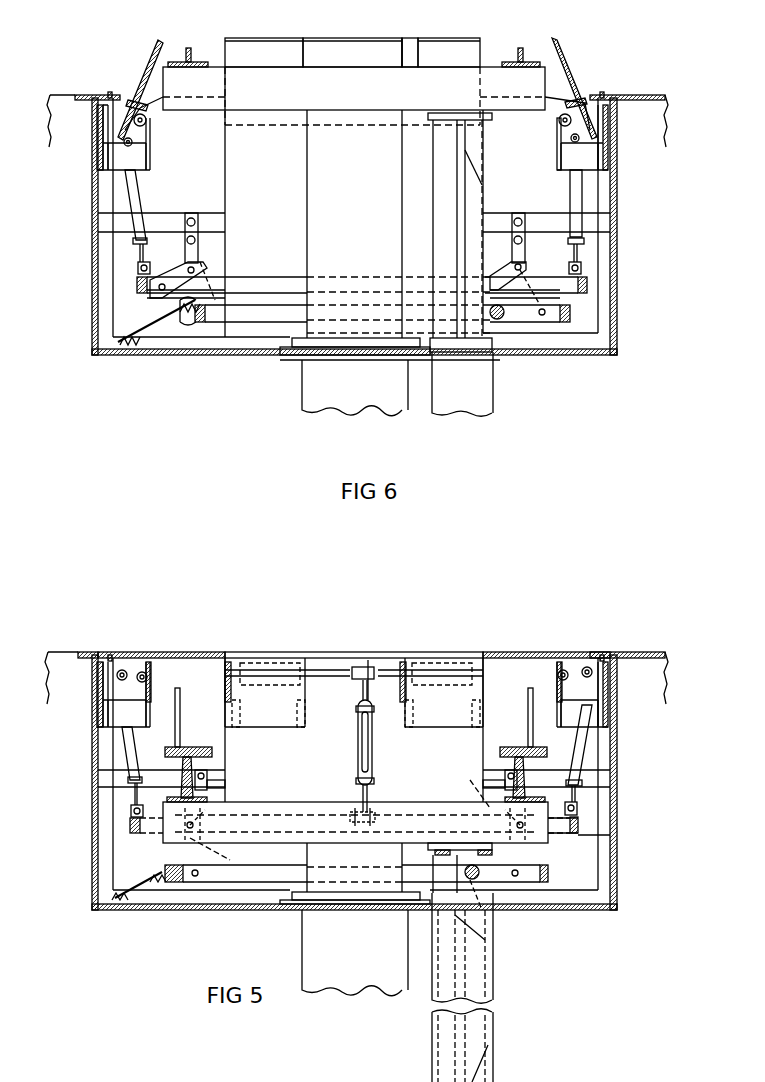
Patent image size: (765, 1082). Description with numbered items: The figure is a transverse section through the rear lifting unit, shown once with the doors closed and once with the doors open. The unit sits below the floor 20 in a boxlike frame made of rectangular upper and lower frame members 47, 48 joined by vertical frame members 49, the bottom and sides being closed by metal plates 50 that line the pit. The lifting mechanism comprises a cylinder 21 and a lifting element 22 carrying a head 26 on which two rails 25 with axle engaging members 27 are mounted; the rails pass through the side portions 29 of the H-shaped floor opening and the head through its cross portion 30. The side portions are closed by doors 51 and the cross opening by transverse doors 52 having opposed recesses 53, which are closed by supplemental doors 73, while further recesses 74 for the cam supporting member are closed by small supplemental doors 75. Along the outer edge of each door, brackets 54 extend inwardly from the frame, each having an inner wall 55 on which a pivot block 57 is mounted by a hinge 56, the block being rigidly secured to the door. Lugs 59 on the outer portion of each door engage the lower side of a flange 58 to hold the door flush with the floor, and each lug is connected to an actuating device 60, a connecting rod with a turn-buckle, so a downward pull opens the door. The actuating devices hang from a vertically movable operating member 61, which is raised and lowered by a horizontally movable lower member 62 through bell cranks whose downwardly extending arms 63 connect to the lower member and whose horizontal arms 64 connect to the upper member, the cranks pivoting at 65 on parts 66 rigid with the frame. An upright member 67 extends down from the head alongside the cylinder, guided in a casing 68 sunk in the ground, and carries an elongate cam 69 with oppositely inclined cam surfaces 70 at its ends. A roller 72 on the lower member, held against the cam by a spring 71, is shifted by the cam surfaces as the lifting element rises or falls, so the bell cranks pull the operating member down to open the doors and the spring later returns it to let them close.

In FIG. 6, the floor 20 is at (645, 99).
In FIG. 5, the floor 20 is at (645, 656).
In FIG. 6, the cylinder 21 is at (400, 405).
In FIG. 5, the cylinder 21 is at (302, 933).
In FIG. 6, the lifting element 22 is at (310, 156).
In FIG. 5, the lifting element 22 is at (310, 855).
In FIG. 6, the rails 25 is at (200, 68).
In FIG. 5, the rails 25 is at (180, 775).
In FIG. 6, the head 26 is at (270, 100).
In FIG. 5, the head 26 is at (262, 810).
In FIG. 5, the axle engaging members 27 is at (180, 738).
In FIG. 6, the side portions 29 is at (140, 100).
In FIG. 5, the side portions 29 is at (590, 832).
In FIG. 5, the cross portion 30 is at (380, 810).
In FIG. 6, the upper frame member 47 is at (95, 100).
In FIG. 5, the upper frame member 47 is at (90, 656).
In FIG. 6, the lower frame member 48 is at (95, 353).
In FIG. 5, the lower frame member 48 is at (95, 912).
In FIG. 6, the vertical frame members 49 is at (100, 262).
In FIG. 5, the vertical frame members 49 is at (100, 805).
In FIG. 6, the metal plates 50 is at (98, 197).
In FIG. 5, the metal plates 50 is at (205, 910).
In FIG. 6, the doors 51 is at (158, 48).
In FIG. 5, the doors 51 is at (200, 655).
In FIG. 6, the transverse doors 52 is at (273, 48).
In FIG. 5, the transverse doors 52 is at (272, 655).
In FIG. 6, the recesses 53 is at (305, 50).
In FIG. 6, the brackets 54 is at (108, 165).
In FIG. 5, the brackets 54 is at (108, 718).
In FIG. 6, the inner wall 55 is at (108, 128).
In FIG. 5, the inner wall 55 is at (108, 680).
In FIG. 6, the hinge 56 is at (147, 121).
In FIG. 5, the hinge 56 is at (148, 678).
In FIG. 6, the pivot block 57 is at (150, 108).
In FIG. 5, the pivot block 57 is at (150, 672).
In FIG. 6, the flange 58 is at (110, 98).
In FIG. 5, the flange 58 is at (110, 665).
In FIG. 6, the lugs 59 is at (123, 142).
In FIG. 5, the lugs 59 is at (122, 670).
In FIG. 6, the actuating device 60 is at (141, 200).
In FIG. 5, the actuating device 60 is at (135, 745).
In FIG. 6, the operating member 61 is at (278, 285).
In FIG. 5, the operating member 61 is at (573, 836).
In FIG. 6, the lower operating member 62 is at (280, 320).
In FIG. 5, the lower operating member 62 is at (548, 870).
In FIG. 6, the downwardly extending arms 63 is at (165, 300).
In FIG. 5, the downwardly extending arms 63 is at (188, 864).
In FIG. 6, the horizontal arms 64 is at (205, 280).
In FIG. 5, the horizontal arms 64 is at (140, 836).
In FIG. 6, the pivot 65 is at (200, 262).
In FIG. 5, the pivot 65 is at (192, 824).
In FIG. 6, the parts 66 is at (185, 240).
In FIG. 5, the parts 66 is at (212, 785).
In FIG. 6, the upright member 67 is at (436, 195).
In FIG. 5, the upright member 67 is at (458, 950).
In FIG. 6, the casing 68 is at (493, 405).
In FIG. 5, the casing 68 is at (495, 990).
In FIG. 5, the cam 69 is at (485, 945).
In FIG. 6, the cam surfaces 70 is at (470, 145).
In FIG. 5, the cam surfaces 70 is at (478, 918).
In FIG. 6, the spring 71 is at (163, 332).
In FIG. 5, the spring 71 is at (150, 882).
In FIG. 5, the roller 72 is at (480, 878).
In FIG. 6, the supplemental doors 73 is at (375, 50).
In FIG. 5, the supplemental doors 73 is at (345, 655).
In FIG. 6, the recesses 74 is at (423, 52).
In FIG. 6, the small supplemental doors 75 is at (468, 45).
In FIG. 5, the small supplemental doors 75 is at (450, 655).